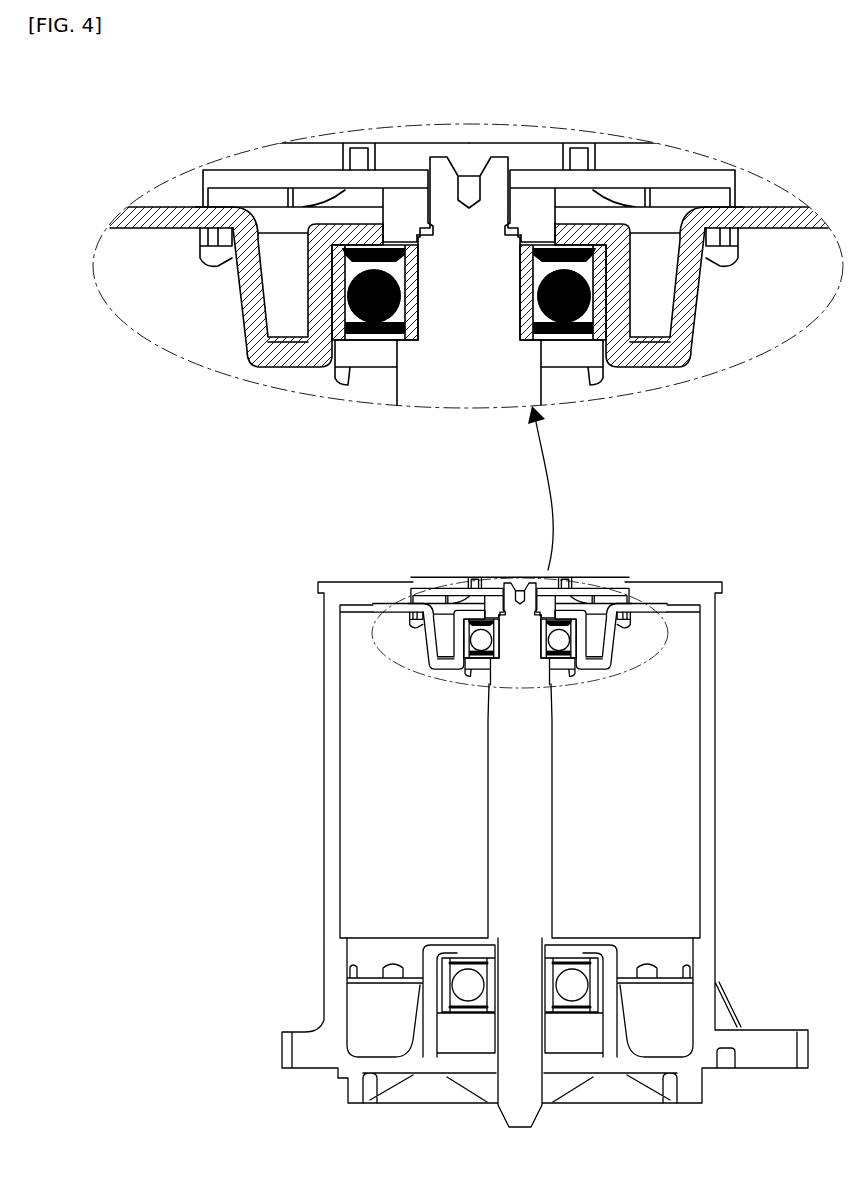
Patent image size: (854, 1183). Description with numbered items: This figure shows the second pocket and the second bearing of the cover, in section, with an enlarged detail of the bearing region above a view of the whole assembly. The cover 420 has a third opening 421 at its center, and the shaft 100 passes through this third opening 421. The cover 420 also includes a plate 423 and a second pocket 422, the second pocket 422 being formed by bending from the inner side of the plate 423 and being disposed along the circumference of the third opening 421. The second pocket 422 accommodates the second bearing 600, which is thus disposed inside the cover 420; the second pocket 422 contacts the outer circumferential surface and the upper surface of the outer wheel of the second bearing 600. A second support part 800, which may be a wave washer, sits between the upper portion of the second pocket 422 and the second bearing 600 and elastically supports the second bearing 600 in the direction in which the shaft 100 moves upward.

The shaft 100 is at (439, 383).
The cover 420 is at (438, 247).
The third opening 421 is at (390, 237).
The second pocket 422 is at (320, 288).
The plate 423 is at (153, 229).
The second bearing 600 is at (348, 320).
The second support part 800 is at (372, 247).